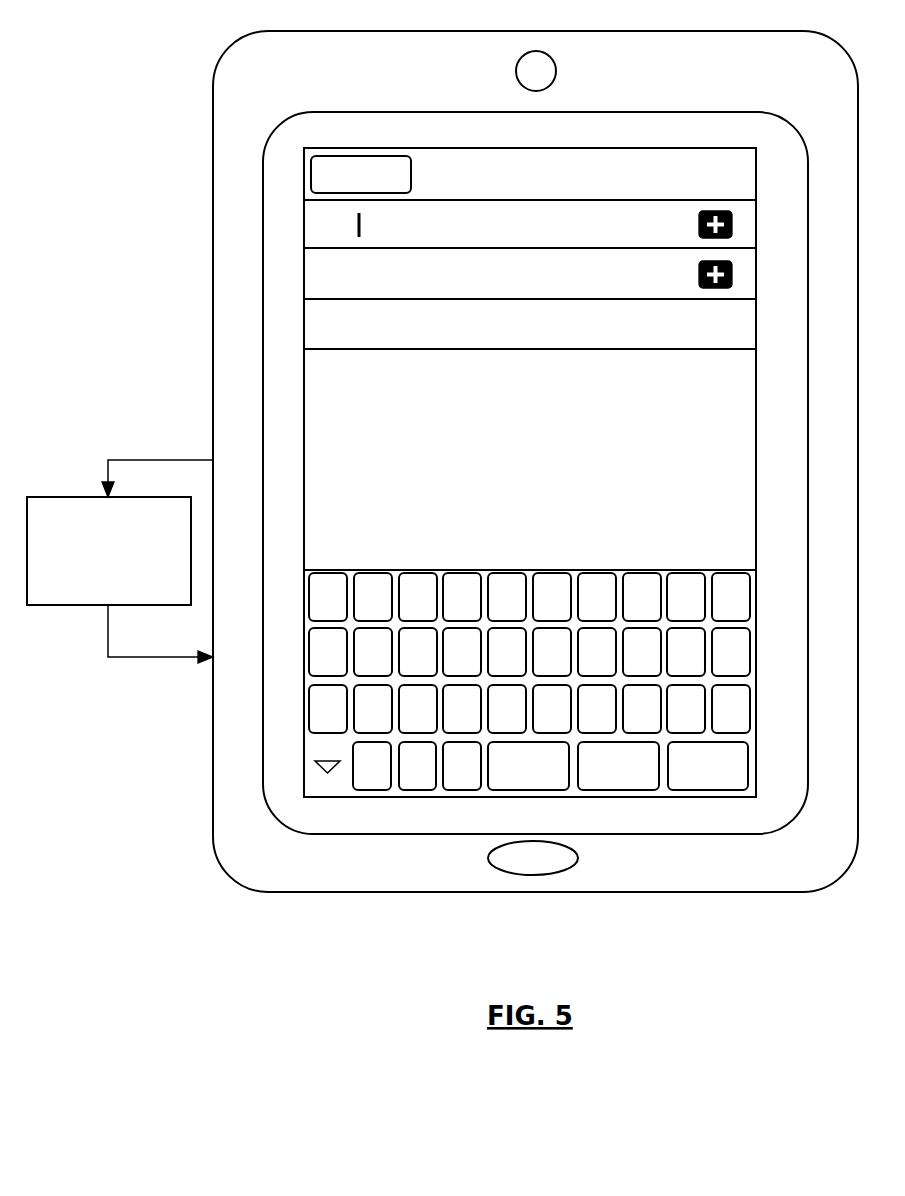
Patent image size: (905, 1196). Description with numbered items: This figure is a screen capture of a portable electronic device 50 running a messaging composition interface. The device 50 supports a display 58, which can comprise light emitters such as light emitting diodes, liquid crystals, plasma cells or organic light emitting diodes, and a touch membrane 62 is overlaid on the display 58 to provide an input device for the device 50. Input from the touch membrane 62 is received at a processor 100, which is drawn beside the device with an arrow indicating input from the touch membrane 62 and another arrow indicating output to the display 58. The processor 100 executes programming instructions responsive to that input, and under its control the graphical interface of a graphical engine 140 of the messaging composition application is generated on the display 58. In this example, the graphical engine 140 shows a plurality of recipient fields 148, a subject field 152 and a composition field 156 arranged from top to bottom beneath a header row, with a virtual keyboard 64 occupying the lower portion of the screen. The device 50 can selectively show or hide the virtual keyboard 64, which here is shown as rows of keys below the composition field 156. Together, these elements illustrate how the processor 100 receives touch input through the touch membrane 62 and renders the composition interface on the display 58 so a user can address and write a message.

The device 50 is at (173, 890).
The graphical engine 140 is at (270, 408).
The recipient fields 148 is at (304, 254).
The subject field 152 is at (304, 316).
The composition field 156 is at (304, 368).
The virtual keyboard 64 is at (319, 717).
The processor 100 is at (109, 551).
The touch membrane 62 is at (157, 448).
The display 58 is at (157, 662).